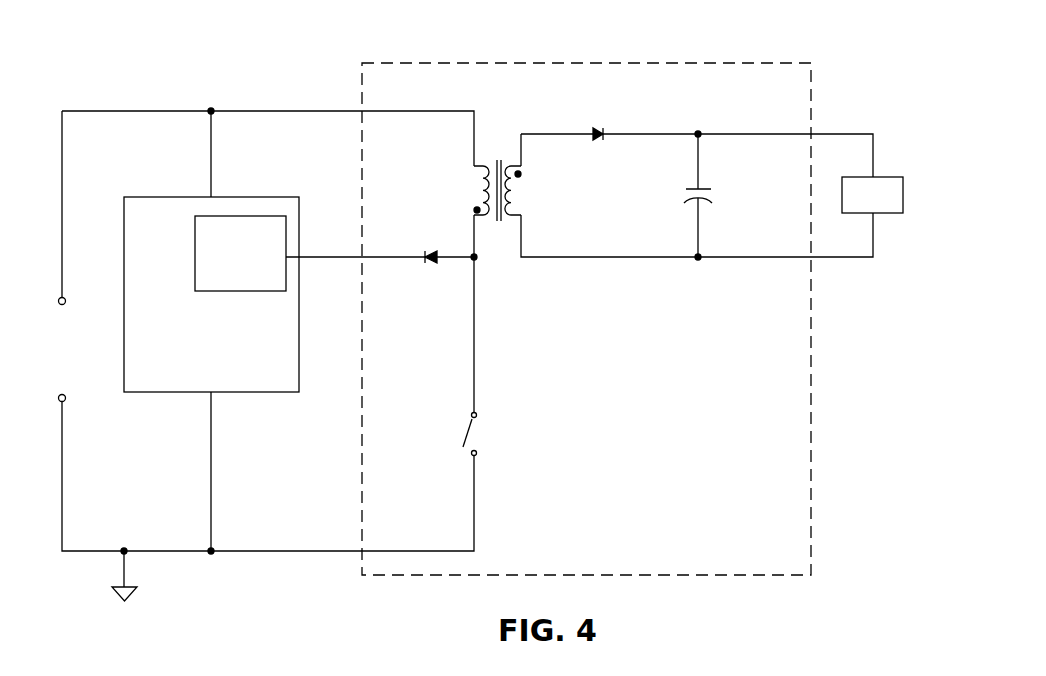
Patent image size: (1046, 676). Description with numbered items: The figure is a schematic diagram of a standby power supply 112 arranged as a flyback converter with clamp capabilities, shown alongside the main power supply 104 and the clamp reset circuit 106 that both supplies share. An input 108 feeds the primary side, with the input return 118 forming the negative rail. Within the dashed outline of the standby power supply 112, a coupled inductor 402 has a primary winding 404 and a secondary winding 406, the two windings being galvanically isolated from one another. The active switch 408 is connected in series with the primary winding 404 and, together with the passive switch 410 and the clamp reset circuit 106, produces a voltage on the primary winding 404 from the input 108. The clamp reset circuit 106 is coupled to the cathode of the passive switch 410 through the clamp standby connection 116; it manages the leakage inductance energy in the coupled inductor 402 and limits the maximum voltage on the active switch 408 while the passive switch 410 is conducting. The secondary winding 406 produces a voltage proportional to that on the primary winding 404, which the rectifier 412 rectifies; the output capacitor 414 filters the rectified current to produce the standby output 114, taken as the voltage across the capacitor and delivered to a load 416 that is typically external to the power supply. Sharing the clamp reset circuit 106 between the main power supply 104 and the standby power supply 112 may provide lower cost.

The main power supply 104 is at (146, 404).
The clamp reset circuit 106 is at (190, 245).
The input (VIN) 108 is at (46, 344).
The standby power supply 112 is at (718, 50).
The standby output (VSO) 114 is at (750, 181).
The clamp standby connection 116 is at (320, 252).
The input return 118 is at (112, 582).
The coupled inductor T3 402 is at (499, 215).
The primary winding 404 is at (472, 194).
The secondary winding 406 is at (523, 189).
The active switch S4 408 is at (452, 439).
The passive switch D8 410 is at (426, 288).
The rectifier D9 412 is at (592, 121).
The output capacitor C3 414 is at (689, 180).
The load 416 is at (884, 171).